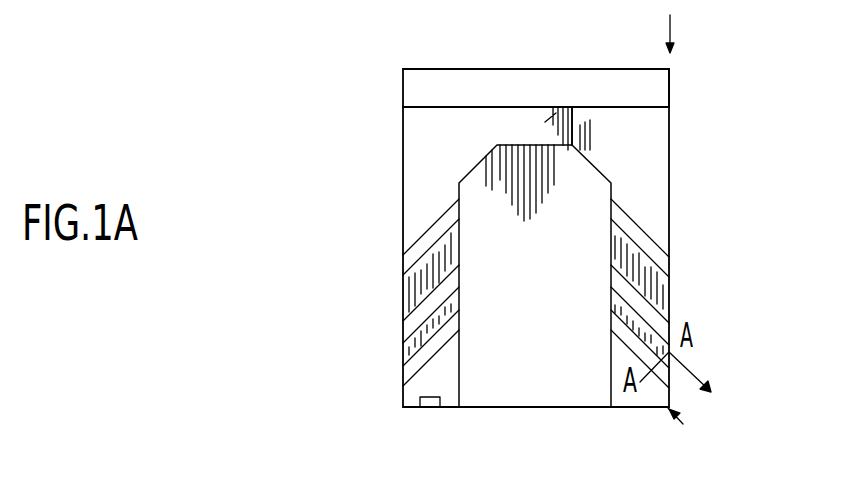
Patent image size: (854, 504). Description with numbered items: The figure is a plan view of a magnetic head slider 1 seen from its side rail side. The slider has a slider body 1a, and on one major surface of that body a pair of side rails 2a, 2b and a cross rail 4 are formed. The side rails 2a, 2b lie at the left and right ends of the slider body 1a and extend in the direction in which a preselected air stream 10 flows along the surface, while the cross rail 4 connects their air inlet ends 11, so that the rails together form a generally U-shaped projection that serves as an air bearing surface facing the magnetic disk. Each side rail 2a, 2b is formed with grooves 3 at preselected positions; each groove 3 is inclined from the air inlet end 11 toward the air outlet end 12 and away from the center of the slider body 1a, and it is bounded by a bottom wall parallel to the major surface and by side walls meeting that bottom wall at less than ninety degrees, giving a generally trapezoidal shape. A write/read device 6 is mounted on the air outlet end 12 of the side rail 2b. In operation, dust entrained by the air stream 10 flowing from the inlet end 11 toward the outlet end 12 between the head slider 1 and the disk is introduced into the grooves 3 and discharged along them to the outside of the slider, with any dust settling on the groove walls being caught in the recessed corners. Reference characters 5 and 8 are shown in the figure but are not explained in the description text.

The head slider 1 is at (669, 93).
The slider body 1a is at (567, 247).
The side rail 2a is at (422, 208).
The side rail 2b is at (668, 297).
The groove 3 is at (427, 253).
The cross rail 4 is at (565, 108).
The upper layer 5 is at (486, 74).
The write/read device 6 is at (428, 407).
The insulating film 8 is at (463, 133).
The air stream 10 is at (670, 30).
The air inlet end 11 is at (552, 70).
The air outlet end 12 is at (530, 408).